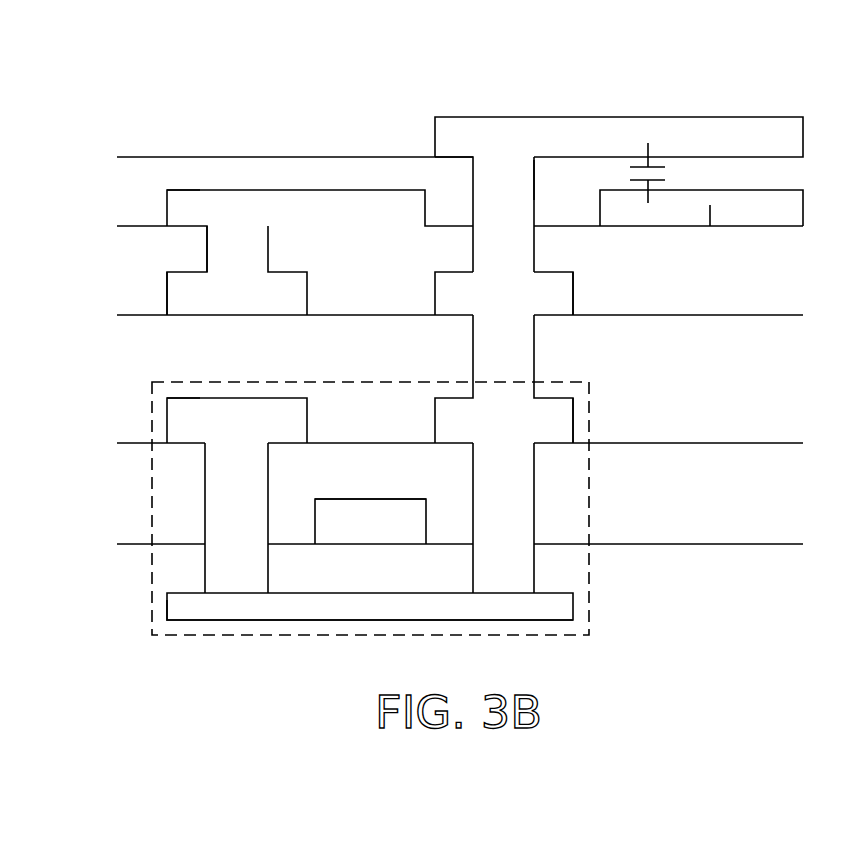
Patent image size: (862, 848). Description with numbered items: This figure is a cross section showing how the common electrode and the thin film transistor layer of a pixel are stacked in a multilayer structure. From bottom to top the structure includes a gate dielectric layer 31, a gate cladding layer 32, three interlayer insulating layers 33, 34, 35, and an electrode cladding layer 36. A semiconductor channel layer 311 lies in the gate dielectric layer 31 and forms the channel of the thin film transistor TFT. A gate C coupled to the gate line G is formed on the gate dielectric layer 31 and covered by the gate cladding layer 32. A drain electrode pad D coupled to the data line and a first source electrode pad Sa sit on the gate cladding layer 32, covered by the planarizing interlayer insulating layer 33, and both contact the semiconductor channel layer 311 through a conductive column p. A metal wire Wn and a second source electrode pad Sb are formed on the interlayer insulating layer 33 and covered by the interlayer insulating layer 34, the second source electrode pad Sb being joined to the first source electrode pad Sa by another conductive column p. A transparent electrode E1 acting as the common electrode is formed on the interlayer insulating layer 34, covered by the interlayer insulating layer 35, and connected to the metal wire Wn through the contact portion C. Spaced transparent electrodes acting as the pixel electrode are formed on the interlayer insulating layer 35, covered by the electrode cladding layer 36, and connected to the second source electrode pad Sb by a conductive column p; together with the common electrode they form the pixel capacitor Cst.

The gate dielectric layer 31 is at (775, 597).
The gate cladding layer 32 is at (775, 493).
The interlayer insulating layer 33 is at (775, 380).
The interlayer insulating layer 34 is at (775, 268).
The interlayer insulating layer 35 is at (775, 173).
The electrode cladding layer 36 is at (580, 117).
The semiconductor channel layer 311 is at (167, 606).
The thin film transistor TFT is at (152, 575).
The pixel capacitor Cst is at (668, 173).
The first source electrode pad Sa is at (575, 418).
The second source electrode pad Sb is at (575, 292).
The gate C is at (205, 250).
The metal wire Wn is at (167, 295).
The conductive column p is at (536, 172).
The transparent electrode E1 is at (167, 205).
The gate line G is at (368, 499).
The drain electrode pad D is at (167, 425).